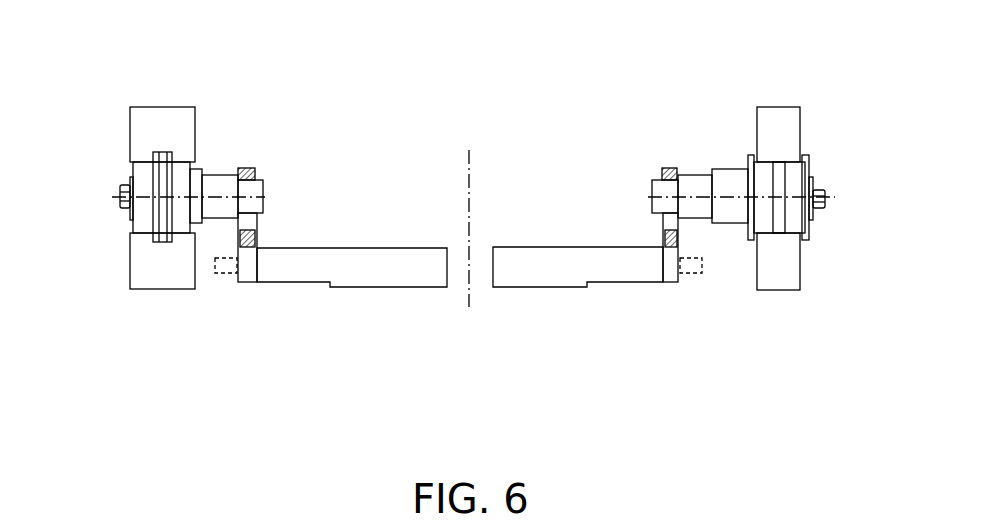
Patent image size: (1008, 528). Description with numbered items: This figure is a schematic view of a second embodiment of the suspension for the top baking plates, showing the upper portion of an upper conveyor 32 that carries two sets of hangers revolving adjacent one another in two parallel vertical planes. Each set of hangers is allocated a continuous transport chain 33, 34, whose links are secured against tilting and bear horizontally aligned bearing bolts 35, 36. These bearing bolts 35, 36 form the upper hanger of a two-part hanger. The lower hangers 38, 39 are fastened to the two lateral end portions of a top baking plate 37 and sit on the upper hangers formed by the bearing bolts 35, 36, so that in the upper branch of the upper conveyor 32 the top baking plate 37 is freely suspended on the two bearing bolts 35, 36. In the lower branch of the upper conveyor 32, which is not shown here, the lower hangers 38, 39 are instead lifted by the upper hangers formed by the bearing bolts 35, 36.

The upper conveyor 32 is at (466, 204).
The continuous transport chain 33 is at (145, 172).
The continuous transport chain 34 is at (793, 178).
The bearing bolt 35 is at (248, 187).
The bearing bolt 36 is at (660, 193).
The top baking plate 37 is at (460, 319).
The lower hanger 38 is at (279, 242).
The lower hanger 39 is at (624, 240).